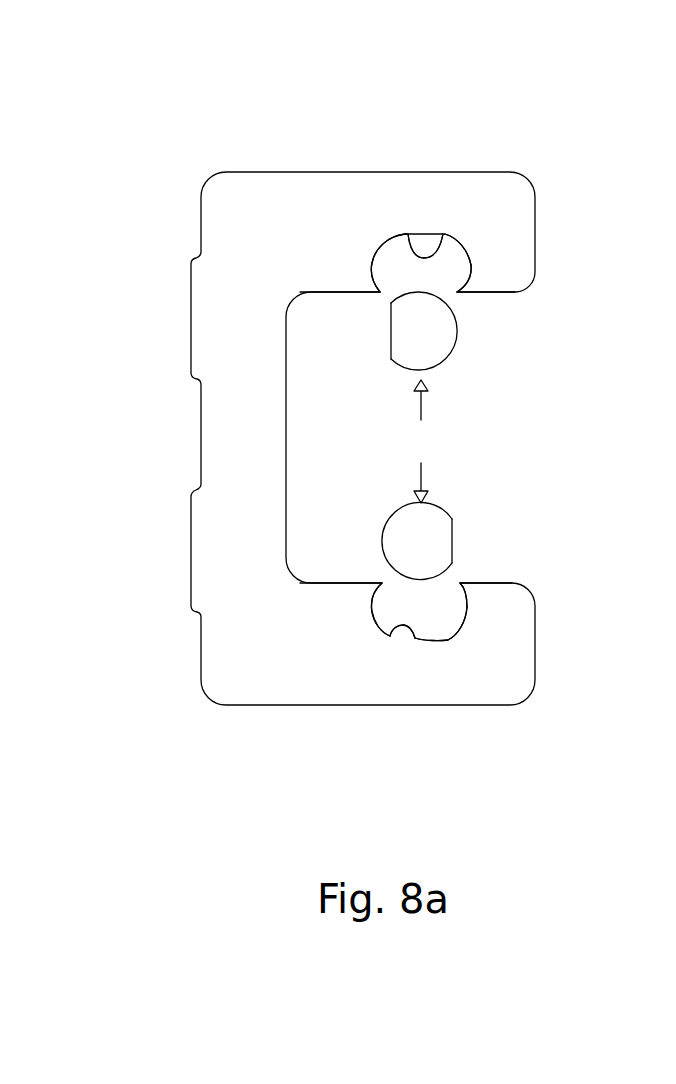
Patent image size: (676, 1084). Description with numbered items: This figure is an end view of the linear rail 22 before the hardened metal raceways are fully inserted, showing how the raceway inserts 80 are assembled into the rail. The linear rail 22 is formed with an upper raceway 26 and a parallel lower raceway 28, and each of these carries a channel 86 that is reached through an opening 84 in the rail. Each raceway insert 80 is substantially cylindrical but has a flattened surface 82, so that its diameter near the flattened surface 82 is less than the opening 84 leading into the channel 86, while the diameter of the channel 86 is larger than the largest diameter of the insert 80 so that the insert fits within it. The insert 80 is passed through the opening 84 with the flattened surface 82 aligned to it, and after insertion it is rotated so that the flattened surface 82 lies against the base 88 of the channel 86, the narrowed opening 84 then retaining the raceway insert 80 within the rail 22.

The linear rail 22 is at (223, 355).
The upper raceway 26 is at (295, 178).
The lower raceway 28 is at (290, 665).
The raceway insert 80 is at (442, 342).
The flattened surface 82 is at (391, 335).
The opening 84 is at (447, 287).
The channel 86 is at (440, 270).
The base of channel 88 is at (437, 240).